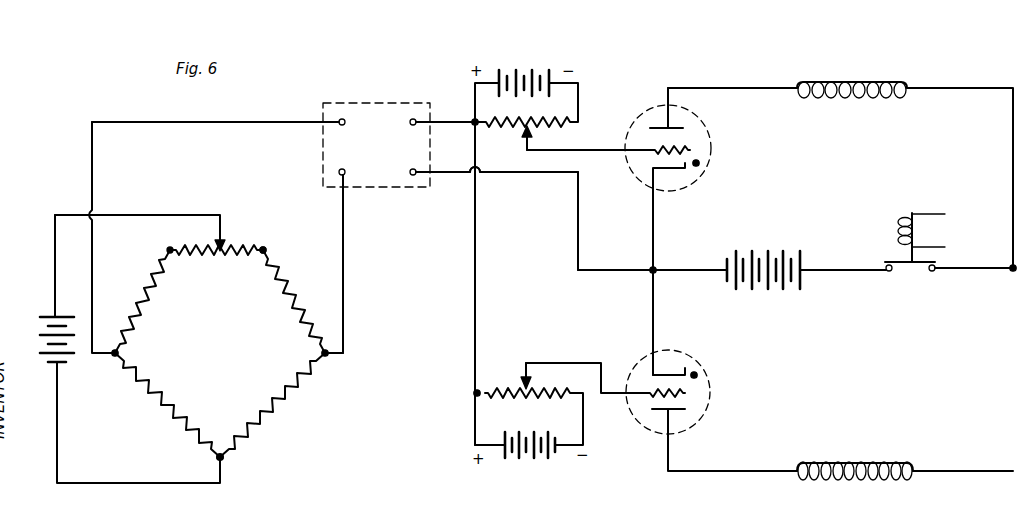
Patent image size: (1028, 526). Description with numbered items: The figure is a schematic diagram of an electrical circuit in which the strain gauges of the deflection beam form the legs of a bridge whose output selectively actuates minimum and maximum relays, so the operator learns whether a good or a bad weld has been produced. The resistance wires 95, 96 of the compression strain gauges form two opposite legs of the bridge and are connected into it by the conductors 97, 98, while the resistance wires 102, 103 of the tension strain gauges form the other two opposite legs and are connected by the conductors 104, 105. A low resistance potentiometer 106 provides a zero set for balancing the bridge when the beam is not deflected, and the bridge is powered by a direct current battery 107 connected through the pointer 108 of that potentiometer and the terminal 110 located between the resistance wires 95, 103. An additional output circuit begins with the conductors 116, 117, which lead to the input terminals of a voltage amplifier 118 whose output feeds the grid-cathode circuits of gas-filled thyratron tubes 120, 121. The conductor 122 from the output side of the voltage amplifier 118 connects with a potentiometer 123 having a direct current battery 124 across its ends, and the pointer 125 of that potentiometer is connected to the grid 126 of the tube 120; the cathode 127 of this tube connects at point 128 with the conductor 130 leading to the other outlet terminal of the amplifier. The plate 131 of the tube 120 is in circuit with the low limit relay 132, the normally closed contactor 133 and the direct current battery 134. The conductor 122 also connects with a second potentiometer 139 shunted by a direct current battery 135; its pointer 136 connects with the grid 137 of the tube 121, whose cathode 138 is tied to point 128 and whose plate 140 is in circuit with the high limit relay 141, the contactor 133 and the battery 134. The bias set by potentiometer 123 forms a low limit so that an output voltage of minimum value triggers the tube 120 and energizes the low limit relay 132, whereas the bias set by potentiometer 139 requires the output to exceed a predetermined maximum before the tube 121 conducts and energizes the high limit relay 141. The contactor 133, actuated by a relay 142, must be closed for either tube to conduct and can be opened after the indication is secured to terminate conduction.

The resistance wire 95 is at (162, 396).
The resistance wire 96 is at (288, 310).
The conductor 97 is at (215, 457).
The conductor 98 is at (268, 254).
The resistance wire 102 is at (146, 290).
The resistance wire 103 is at (285, 400).
The conductor 104 is at (120, 353).
The conductor 105 is at (228, 457).
The low resistance potentiometer 106 is at (221, 256).
The direct current battery 107 is at (72, 356).
The pointer 108 is at (221, 232).
The terminal 110 is at (220, 450).
The conductor 116 is at (95, 162).
The conductor 117 is at (346, 290).
The voltage amplifier 118 is at (362, 114).
The gas-filled thyratron tube 120 is at (716, 129).
The gas-filled thyratron tube 121 is at (691, 349).
The conductor 122 is at (451, 115).
The potentiometer 123 is at (549, 110).
The direct current battery 124 is at (525, 66).
The pointer 125 is at (536, 138).
The grid 126 is at (660, 152).
The cathode 127 is at (667, 170).
The connection point 128 is at (656, 268).
The conductor 130 is at (528, 174).
The plate 131 is at (678, 126).
The low limit relay 132 is at (866, 80).
The normally closed contactor 133 is at (912, 266).
The direct current battery 134 is at (793, 253).
The direct current battery 135 is at (533, 466).
The pointer 136 is at (520, 373).
The grid 137 is at (676, 401).
The cathode 138 is at (669, 370).
The second potentiometer 139 is at (500, 401).
The plate 140 is at (681, 415).
The high limit relay 141 is at (854, 462).
The relay 142 is at (900, 224).